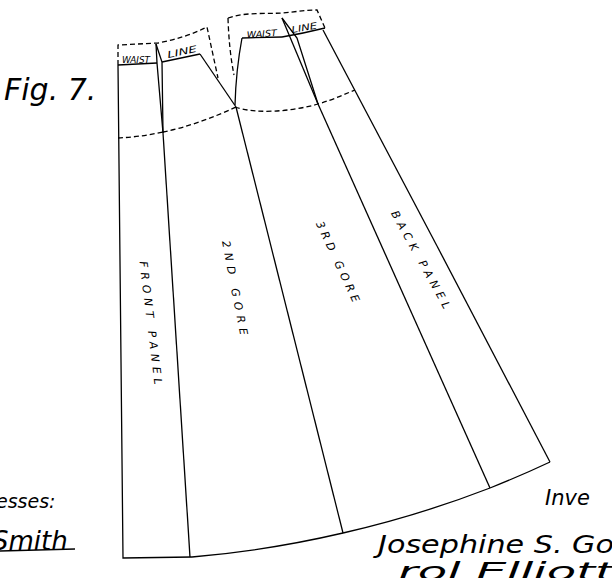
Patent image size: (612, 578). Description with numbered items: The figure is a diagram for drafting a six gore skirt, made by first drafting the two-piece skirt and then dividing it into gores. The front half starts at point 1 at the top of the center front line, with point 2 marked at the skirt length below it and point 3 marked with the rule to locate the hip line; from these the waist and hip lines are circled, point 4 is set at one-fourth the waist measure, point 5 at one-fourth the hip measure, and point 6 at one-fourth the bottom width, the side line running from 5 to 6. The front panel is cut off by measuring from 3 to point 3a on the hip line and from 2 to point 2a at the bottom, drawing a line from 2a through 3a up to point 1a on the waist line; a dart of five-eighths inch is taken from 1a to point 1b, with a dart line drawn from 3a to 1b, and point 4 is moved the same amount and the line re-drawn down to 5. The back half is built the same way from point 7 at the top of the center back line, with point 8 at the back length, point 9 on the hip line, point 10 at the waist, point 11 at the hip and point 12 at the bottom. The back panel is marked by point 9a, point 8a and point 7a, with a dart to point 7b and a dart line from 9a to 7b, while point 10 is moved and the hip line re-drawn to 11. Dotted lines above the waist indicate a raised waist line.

The point 1 is at (137, 74).
The point 1a is at (149, 88).
The point 1b is at (178, 88).
The point 2 is at (155, 312).
The point 2a is at (176, 346).
The point 3 is at (140, 128).
The point 3a is at (188, 121).
The point 4 is at (214, 80).
The point 5 is at (279, 316).
The point 6 is at (267, 535).
The point 7 is at (359, 137).
The point 7a is at (300, 61).
The point 7b is at (293, 61).
The point 8 is at (493, 358).
The point 8a is at (519, 475).
The point 9 is at (295, 94).
The point 9a is at (391, 288).
The point 10 is at (262, 49).
The point 11 is at (248, 76).
The point 12 is at (416, 510).